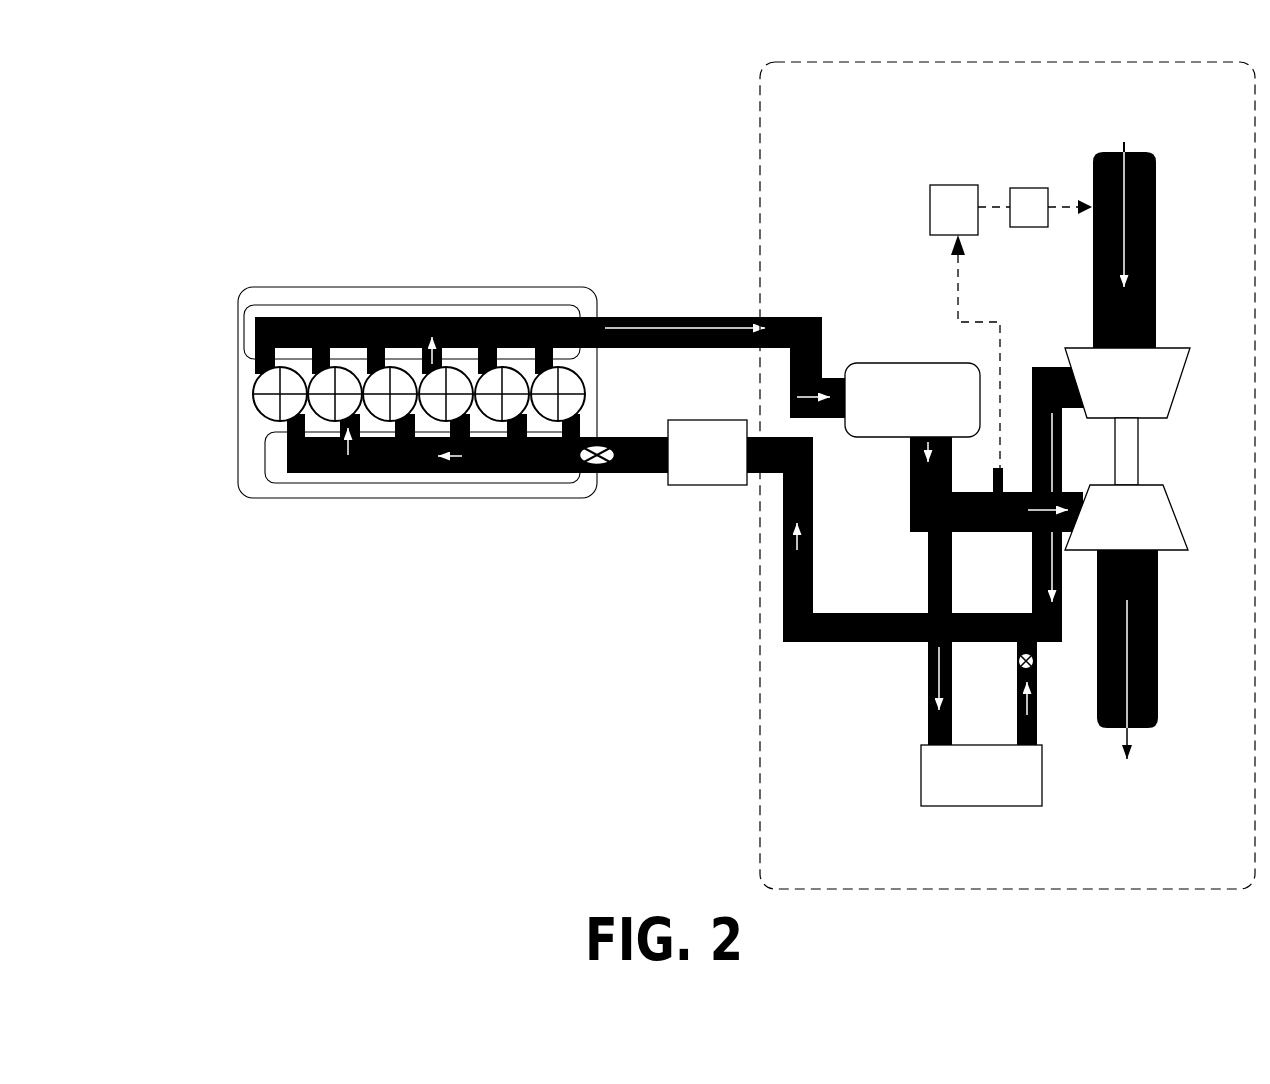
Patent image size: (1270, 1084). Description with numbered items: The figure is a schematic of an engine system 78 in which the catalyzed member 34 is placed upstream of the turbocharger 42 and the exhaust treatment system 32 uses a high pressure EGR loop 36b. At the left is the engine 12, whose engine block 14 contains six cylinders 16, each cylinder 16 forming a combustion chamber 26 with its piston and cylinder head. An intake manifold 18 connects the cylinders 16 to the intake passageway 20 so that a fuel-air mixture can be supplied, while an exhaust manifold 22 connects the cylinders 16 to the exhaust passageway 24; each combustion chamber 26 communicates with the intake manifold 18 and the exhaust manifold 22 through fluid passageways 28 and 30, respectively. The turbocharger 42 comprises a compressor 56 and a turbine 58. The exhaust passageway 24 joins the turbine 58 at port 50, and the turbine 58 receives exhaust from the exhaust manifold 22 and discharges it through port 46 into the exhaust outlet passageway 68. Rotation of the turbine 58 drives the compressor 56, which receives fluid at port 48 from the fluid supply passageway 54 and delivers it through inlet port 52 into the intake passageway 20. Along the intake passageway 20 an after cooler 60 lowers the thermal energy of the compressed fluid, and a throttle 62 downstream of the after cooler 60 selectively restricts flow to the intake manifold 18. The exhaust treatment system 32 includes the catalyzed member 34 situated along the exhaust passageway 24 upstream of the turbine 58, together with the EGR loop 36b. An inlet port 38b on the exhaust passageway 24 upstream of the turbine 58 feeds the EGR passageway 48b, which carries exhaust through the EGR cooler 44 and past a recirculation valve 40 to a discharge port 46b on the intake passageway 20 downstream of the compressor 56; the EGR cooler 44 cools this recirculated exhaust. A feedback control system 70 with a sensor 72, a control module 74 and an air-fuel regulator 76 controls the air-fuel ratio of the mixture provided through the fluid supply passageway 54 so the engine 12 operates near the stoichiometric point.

The engine 12 is at (404, 391).
The engine block 14 is at (370, 498).
The cylinders 16 is at (421, 499).
The intake manifold 18 is at (293, 485).
The intake passageway 20 is at (629, 504).
The exhaust manifold 22 is at (333, 307).
The exhaust passageway 24 is at (682, 317).
The combustion chamber 26 is at (400, 383).
The fluid passageway 28 is at (283, 423).
The fluid passageway 30 is at (366, 331).
The exhaust treatment system 32 is at (757, 740).
The catalyzed member 34 is at (935, 363).
The high pressure EGR loop 36b is at (891, 797).
The inlet port 38b is at (921, 548).
The recirculation valve 40 is at (1036, 668).
The turbocharger 42 is at (1155, 450).
The EGR cooler 44 is at (976, 806).
The port 46 is at (1141, 504).
The discharge port 46b is at (1016, 642).
The port 48 is at (1141, 390).
The EGR passageway 48b is at (927, 727).
The port 50 is at (1075, 518).
The inlet port 52 is at (1085, 402).
The fluid supply passageway 54 is at (1153, 227).
The compressor 56 is at (1173, 393).
The turbine 58 is at (1172, 503).
The after cooler 60 is at (705, 487).
The throttle 62 is at (572, 478).
The exhaust outlet passageway 68 is at (1159, 668).
The feedback control system 70 is at (982, 285).
The sensor 72 is at (1003, 467).
The control module 74 is at (930, 207).
The air-fuel regulator 76 is at (1030, 188).
The engine system 78 is at (347, 112).